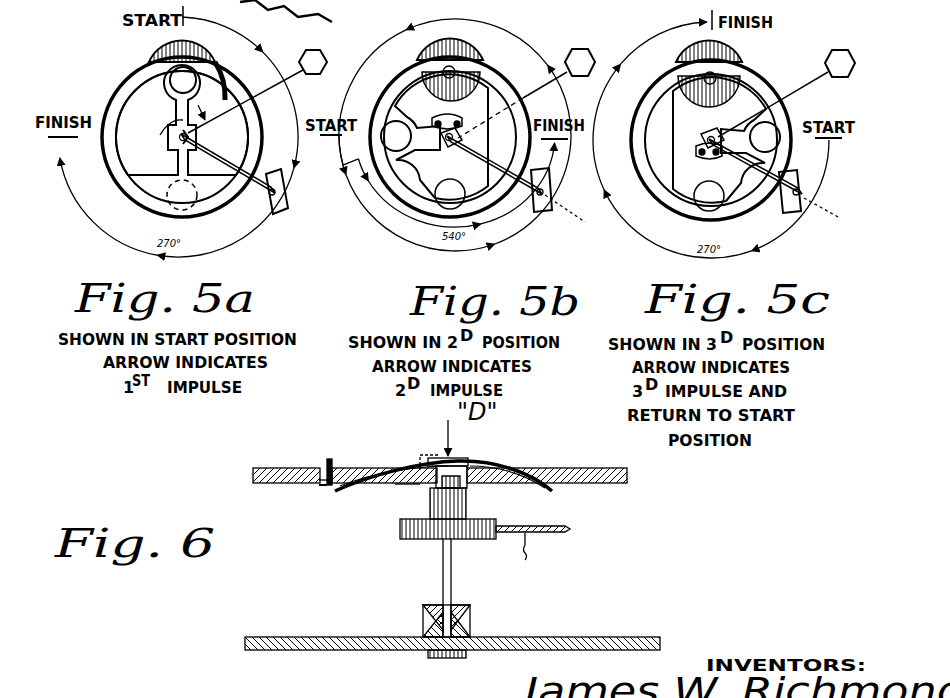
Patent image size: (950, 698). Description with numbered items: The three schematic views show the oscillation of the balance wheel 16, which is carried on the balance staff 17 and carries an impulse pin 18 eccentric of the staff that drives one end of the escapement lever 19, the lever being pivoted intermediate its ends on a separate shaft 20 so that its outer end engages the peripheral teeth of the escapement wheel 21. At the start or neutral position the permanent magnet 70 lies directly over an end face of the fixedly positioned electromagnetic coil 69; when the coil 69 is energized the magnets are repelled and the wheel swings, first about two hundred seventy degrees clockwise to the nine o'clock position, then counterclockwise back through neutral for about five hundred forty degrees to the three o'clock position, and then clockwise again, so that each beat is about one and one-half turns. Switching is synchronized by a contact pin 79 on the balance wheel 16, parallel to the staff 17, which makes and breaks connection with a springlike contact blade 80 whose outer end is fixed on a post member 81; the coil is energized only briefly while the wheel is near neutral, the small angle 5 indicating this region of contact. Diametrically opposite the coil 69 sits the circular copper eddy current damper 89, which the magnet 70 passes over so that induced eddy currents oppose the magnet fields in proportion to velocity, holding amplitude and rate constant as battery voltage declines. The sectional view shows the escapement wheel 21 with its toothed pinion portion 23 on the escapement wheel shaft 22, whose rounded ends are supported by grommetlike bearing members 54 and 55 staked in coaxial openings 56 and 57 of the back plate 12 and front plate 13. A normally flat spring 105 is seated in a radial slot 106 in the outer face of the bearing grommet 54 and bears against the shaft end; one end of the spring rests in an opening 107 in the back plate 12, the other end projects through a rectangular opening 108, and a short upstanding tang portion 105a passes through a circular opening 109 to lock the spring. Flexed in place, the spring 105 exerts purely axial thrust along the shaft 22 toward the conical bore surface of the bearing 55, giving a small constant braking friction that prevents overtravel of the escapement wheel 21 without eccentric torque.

In FIG. 6, the back plate 12 is at (272, 482).
In FIG. 6, the front plate 13 is at (272, 640).
In FIG. 5a, the balance wheel 16 is at (150, 192).
In FIG. 5b, the balance wheel 16 is at (415, 205).
In FIG. 5c, the balance wheel 16 is at (690, 215).
In FIG. 5a, the balance staff 17 is at (178, 139).
In FIG. 5b, the balance staff 17 is at (447, 150).
In FIG. 5c, the balance staff 17 is at (715, 134).
In FIG. 5a, the impulse pin 18 is at (195, 168).
In FIG. 5b, the impulse pin 18 is at (432, 110).
In FIG. 5c, the impulse pin 18 is at (719, 139).
In FIG. 5a, the escapement lever 19 is at (228, 149).
In FIG. 5b, the escapement lever 19 is at (491, 165).
In FIG. 5c, the escapement lever 19 is at (759, 161).
In FIG. 6, the escapement lever 19 is at (538, 558).
In FIG. 5a, the shaft 20 is at (278, 212).
In FIG. 5b, the shaft 20 is at (548, 205).
In FIG. 5c, the shaft 20 is at (805, 193).
In FIG. 6, the escapement wheel 21 is at (500, 524).
In FIG. 6, the escapement wheel shaft 22 is at (452, 590).
In FIG. 6, the toothed pinion portion 23 is at (432, 506).
In FIG. 5b, the angle of movement 5 is at (495, 168).
In FIG. 5c, the angle of movement 5 is at (740, 172).
In FIG. 6, the bearing grommet 54 is at (462, 462).
In FIG. 6, the bearing grommet 55 is at (432, 652).
In FIG. 6, the opening 56 is at (466, 474).
In FIG. 6, the opening 57 is at (460, 656).
In FIG. 5a, the electromagnetic coil 69 is at (205, 56).
In FIG. 5b, the electromagnetic coil 69 is at (468, 48).
In FIG. 5c, the electromagnetic coil 69 is at (735, 58).
In FIG. 5a, the permanent magnet 70 is at (175, 80).
In FIG. 5b, the permanent magnet 70 is at (395, 130).
In FIG. 5c, the permanent magnet 70 is at (772, 132).
In FIG. 5a, the contact pin 79 is at (178, 130).
In FIG. 5b, the contact pin 79 is at (455, 135).
In FIG. 5c, the contact pin 79 is at (735, 168).
In FIG. 5a, the contact blade 80 is at (278, 90).
In FIG. 5b, the contact blade 80 is at (545, 98).
In FIG. 5c, the contact blade 80 is at (790, 92).
In FIG. 5a, the post member 81 is at (317, 52).
In FIG. 5b, the post member 81 is at (580, 50).
In FIG. 5c, the post member 81 is at (852, 48).
In FIG. 5a, the eddy current damper 89 is at (190, 212).
In FIG. 5b, the eddy current damper 89 is at (450, 207).
In FIG. 5c, the eddy current damper 89 is at (716, 200).
In FIG. 6, the spring 105 is at (400, 470).
In FIG. 6, the tang portion 105a is at (327, 458).
In FIG. 6, the slot 106 is at (420, 468).
In FIG. 6, the opening 107 is at (533, 478).
In FIG. 6, the rectangular opening 108 is at (395, 490).
In FIG. 6, the circular opening 109 is at (325, 488).